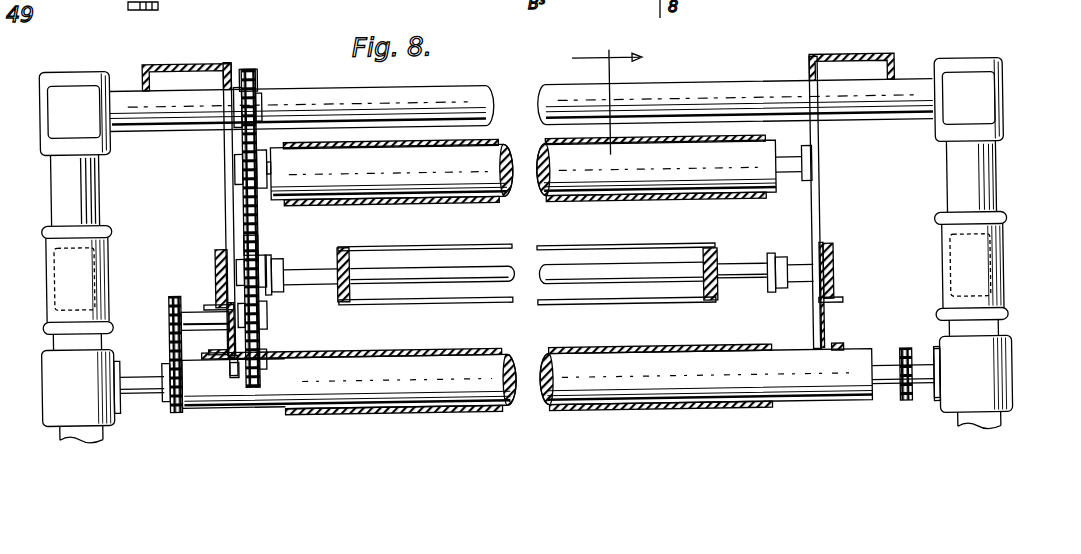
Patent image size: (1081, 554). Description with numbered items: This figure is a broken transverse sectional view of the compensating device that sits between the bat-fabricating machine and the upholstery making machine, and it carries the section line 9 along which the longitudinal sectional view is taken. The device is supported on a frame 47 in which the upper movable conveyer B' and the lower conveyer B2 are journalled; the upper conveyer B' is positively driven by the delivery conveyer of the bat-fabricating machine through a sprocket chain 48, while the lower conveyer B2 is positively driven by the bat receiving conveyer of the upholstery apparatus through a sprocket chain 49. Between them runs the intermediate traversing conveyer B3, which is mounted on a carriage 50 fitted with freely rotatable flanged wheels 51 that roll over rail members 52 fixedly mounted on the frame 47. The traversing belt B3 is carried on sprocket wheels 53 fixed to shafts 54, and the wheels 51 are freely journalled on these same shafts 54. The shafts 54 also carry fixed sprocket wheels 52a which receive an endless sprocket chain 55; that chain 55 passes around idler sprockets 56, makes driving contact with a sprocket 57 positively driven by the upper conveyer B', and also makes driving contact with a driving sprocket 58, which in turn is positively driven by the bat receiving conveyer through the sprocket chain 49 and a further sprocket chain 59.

The frame 47 is at (70, 170).
The sprocket chain 48 is at (1005, 205).
The sprocket chain 49 is at (902, 363).
The carriage 50 is at (281, 265).
The flanged wheels 51 is at (220, 260).
The rail members 52 is at (214, 302).
The sprocket 52a is at (258, 253).
The sprocket wheels 53 is at (347, 262).
The shafts 54 is at (738, 293).
The endless sprocket chain 55 is at (256, 88).
The idler sprockets 56 is at (238, 243).
The sprocket 57 is at (243, 163).
The driving sprocket 58 is at (170, 320).
The sprocket chain 59 is at (168, 346).
The line 9 is at (608, 95).
The upper movable conveyer B' is at (540, 132).
The lower conveyer B2 is at (652, 361).
The intermediate traversing conveyer B3 is at (628, 259).